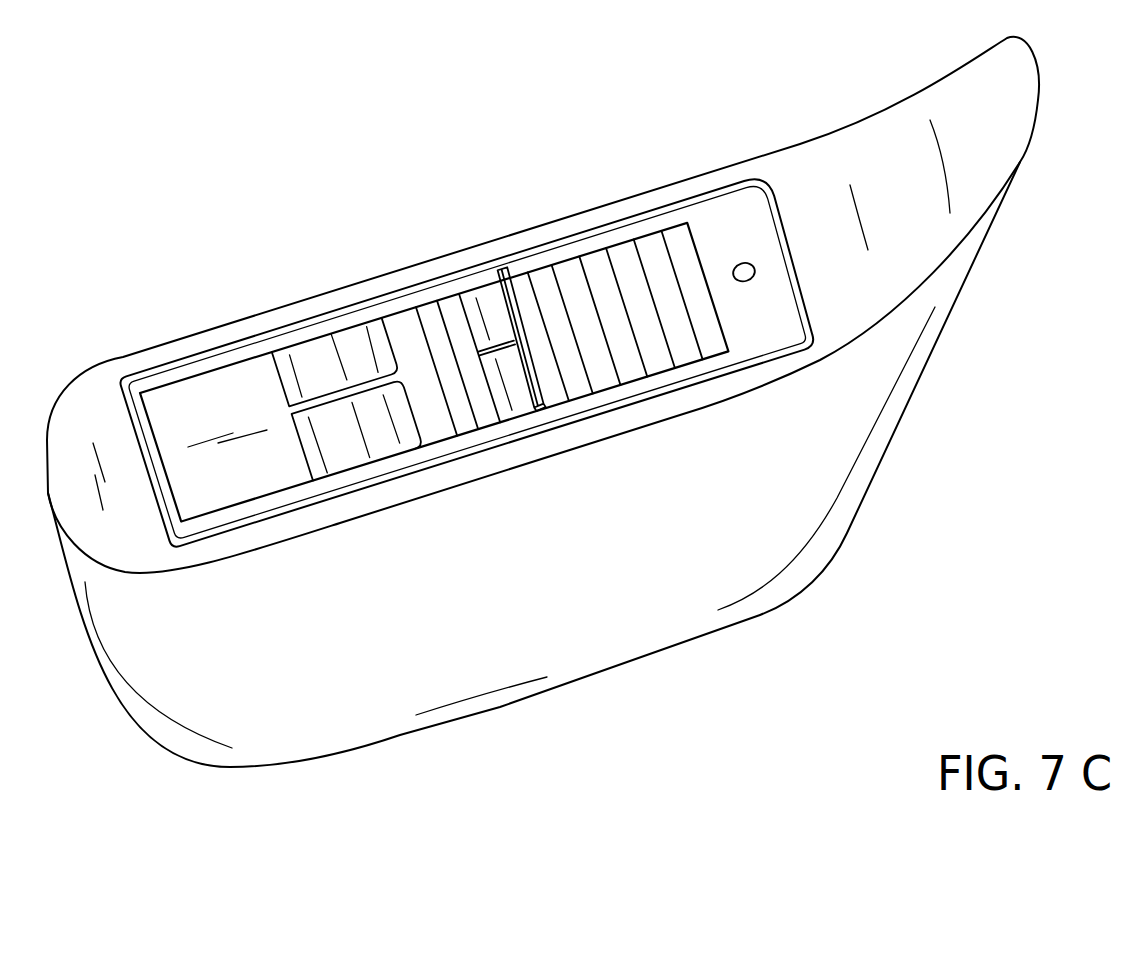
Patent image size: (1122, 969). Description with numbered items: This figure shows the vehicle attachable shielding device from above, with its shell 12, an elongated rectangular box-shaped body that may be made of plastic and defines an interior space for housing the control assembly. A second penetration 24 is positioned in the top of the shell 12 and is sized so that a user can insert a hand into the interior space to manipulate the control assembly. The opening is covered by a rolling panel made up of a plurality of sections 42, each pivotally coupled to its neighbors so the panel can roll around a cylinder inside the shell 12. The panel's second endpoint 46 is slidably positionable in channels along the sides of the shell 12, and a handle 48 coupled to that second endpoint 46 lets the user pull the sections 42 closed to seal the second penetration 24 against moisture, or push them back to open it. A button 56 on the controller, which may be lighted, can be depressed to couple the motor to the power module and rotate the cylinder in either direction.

The shell 12 is at (176, 351).
The second penetration 24 is at (402, 320).
The sections 42 is at (600, 281).
The second endpoint 46 is at (493, 297).
The handle 48 is at (516, 298).
The button 56 is at (749, 260).